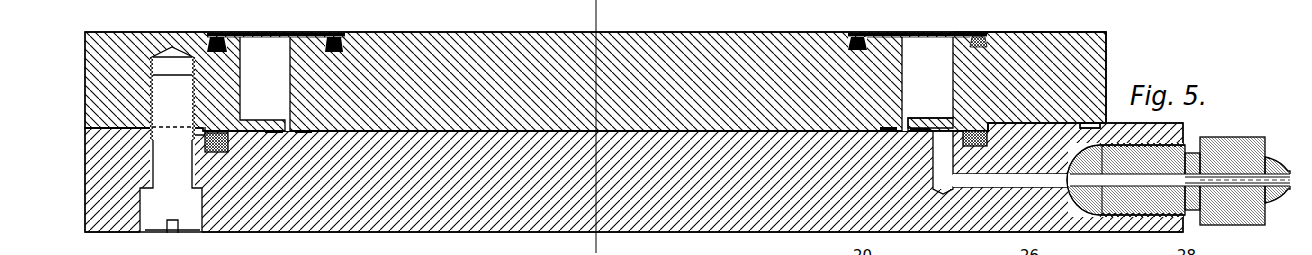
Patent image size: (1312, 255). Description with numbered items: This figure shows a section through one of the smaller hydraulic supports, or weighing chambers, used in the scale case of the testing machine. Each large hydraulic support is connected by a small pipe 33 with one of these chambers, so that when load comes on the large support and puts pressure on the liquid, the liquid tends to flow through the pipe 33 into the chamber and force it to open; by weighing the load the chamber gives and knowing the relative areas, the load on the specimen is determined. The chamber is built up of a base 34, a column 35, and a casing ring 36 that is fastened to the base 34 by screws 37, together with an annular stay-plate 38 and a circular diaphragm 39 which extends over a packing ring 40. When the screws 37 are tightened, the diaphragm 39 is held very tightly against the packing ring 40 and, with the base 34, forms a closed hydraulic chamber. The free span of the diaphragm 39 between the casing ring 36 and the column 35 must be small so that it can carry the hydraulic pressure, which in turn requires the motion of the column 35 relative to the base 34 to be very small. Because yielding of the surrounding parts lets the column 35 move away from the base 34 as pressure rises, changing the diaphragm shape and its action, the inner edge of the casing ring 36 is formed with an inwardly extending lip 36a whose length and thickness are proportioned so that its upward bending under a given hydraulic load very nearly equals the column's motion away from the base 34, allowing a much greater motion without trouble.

The pipe 33 is at (1243, 170).
The base 34 is at (657, 233).
The column 35 is at (718, 33).
The casing ring 36 is at (1018, 32).
The inwardly extending lip 36a is at (912, 99).
The screw 37 is at (190, 235).
The annular stay-plate 38 is at (907, 36).
The circular diaphragm 39 is at (276, 132).
The packing ring 40 is at (227, 150).